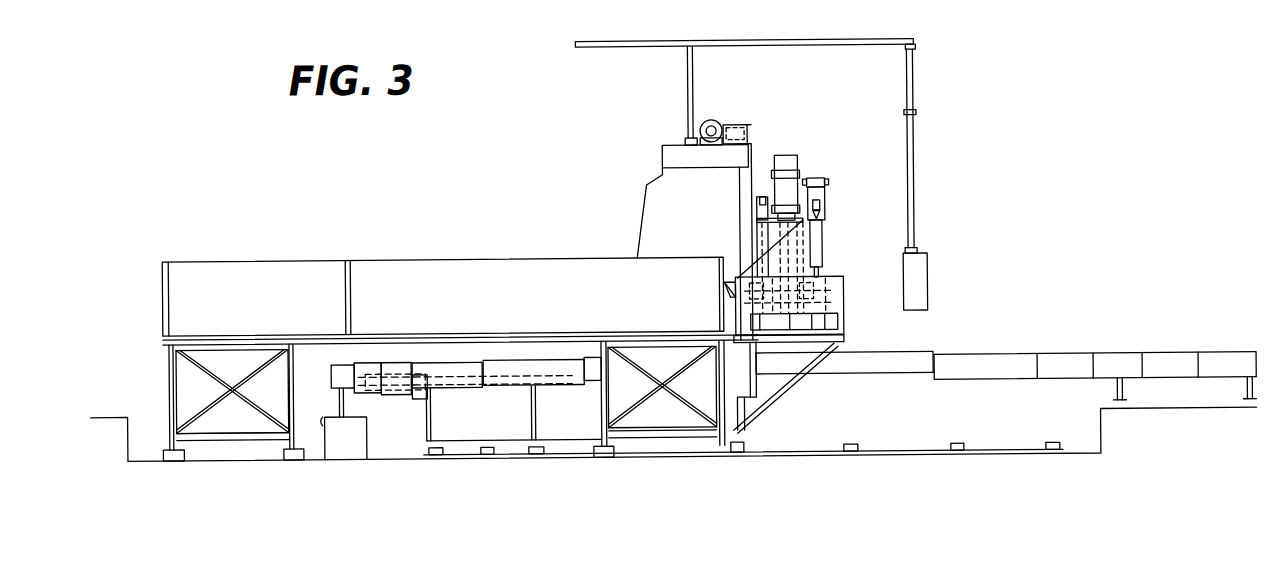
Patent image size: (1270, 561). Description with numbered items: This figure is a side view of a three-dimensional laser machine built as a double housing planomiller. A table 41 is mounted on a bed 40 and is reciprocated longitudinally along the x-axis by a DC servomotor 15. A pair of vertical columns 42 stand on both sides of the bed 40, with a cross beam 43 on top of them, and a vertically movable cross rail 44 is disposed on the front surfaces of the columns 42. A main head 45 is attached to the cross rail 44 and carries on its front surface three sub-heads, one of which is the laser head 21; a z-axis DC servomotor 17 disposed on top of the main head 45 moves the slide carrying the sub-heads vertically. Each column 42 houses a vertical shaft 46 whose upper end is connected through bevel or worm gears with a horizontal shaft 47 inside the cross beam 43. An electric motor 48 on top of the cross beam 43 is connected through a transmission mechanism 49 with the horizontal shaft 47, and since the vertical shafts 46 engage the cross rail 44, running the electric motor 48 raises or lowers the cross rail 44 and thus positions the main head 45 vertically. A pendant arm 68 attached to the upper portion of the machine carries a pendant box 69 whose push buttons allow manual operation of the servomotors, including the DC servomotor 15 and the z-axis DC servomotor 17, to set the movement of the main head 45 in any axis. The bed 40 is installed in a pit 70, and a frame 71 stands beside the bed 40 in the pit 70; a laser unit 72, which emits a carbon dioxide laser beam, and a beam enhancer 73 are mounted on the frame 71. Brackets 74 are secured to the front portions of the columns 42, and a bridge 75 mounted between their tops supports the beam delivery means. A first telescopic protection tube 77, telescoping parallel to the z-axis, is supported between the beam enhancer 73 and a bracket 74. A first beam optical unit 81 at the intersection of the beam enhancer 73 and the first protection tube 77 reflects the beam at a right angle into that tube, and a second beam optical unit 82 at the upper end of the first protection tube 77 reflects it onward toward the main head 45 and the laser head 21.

The DC servomotor 15 is at (398, 390).
The z-axis DC servomotor 17 is at (798, 160).
The laser head 21 is at (851, 339).
The bed 40 is at (1039, 400).
The table 41 is at (923, 354).
The vertical columns 42 is at (643, 227).
The cross beam 43 is at (673, 155).
The cross rail 44 is at (778, 351).
The main head 45 is at (766, 196).
The vertical shaft 46 is at (741, 216).
The horizontal shaft 47 is at (750, 128).
The electric motor 48 is at (714, 121).
The transmission mechanism 49 is at (737, 126).
The pendant arm 68 is at (917, 76).
The pendant box 69 is at (924, 280).
The pit 70 is at (1094, 437).
The frame 71 is at (172, 378).
The laser unit 72 is at (273, 272).
The beam enhancer 73 is at (758, 298).
The brackets 74 is at (774, 258).
The bridge 75 is at (829, 184).
The first telescopic protection tube 77 is at (818, 244).
The first beam optical unit 81 is at (844, 294).
The second beam optical unit 82 is at (830, 204).